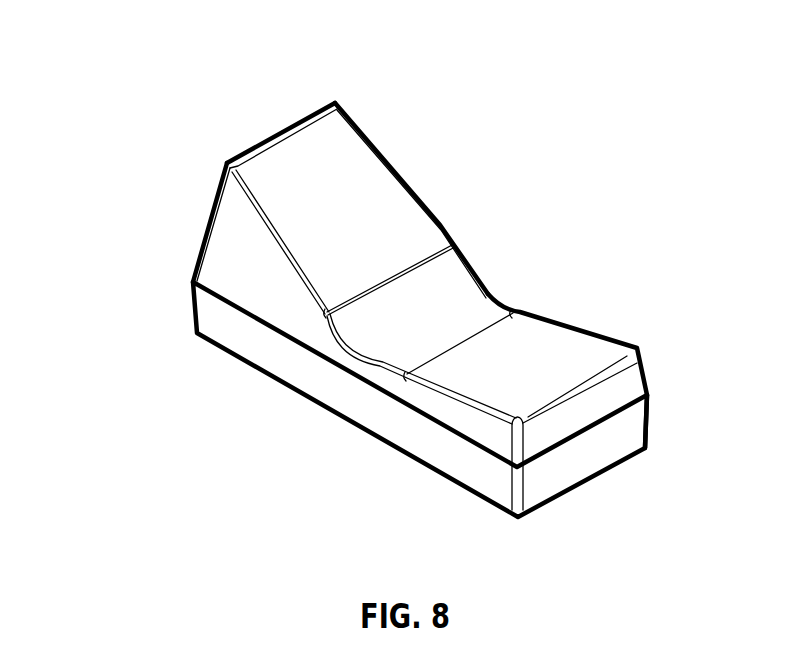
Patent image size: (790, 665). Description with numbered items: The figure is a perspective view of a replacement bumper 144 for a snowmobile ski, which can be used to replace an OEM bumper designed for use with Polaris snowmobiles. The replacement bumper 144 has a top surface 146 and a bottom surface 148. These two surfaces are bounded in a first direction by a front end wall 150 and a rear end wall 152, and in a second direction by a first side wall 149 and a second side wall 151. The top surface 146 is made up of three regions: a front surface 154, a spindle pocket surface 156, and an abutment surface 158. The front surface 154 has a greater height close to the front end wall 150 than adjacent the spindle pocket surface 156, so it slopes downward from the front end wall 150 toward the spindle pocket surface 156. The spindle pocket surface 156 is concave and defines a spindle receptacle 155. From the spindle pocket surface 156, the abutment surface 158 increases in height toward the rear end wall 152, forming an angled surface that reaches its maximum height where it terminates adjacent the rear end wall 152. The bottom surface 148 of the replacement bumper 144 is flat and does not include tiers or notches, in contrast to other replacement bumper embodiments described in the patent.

The replacement bumper 144 is at (161, 57).
The top surface 146 is at (541, 330).
The bottom surface 148 is at (400, 453).
The first side wall 149 is at (245, 272).
The front end wall 150 is at (625, 433).
The second side wall 151 is at (404, 185).
The rear end wall 152 is at (204, 240).
The front surface 154 is at (603, 358).
The spindle receptacle 155 is at (410, 288).
The spindle pocket surface 156 is at (441, 284).
The abutment surface 158 is at (361, 157).